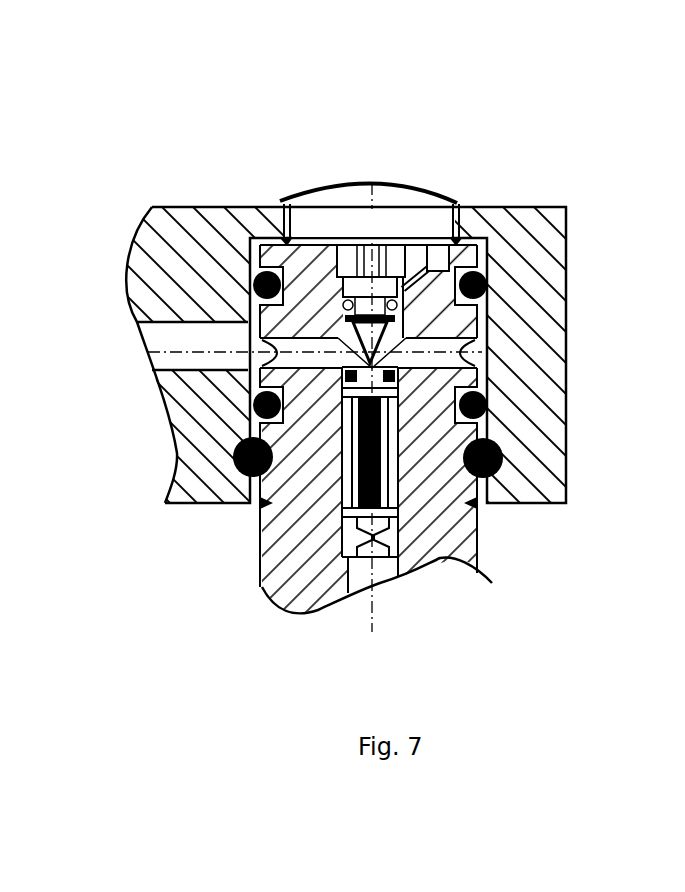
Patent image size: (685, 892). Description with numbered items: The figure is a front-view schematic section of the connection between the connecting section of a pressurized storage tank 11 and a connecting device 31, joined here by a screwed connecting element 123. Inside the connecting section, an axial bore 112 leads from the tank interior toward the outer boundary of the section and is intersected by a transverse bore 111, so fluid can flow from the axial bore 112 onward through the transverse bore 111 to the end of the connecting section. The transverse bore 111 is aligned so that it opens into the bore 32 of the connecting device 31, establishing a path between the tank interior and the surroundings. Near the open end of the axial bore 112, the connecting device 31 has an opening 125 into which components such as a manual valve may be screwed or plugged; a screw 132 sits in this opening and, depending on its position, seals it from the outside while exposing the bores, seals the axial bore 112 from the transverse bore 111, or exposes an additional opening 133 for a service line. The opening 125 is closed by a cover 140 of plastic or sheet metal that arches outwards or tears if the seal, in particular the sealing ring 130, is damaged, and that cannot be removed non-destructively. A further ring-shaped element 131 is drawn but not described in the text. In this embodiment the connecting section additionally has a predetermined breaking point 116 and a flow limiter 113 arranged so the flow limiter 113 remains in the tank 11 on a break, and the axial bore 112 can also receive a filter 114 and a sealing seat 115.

The pressurized storage tank 11 is at (315, 255).
The connecting device 31 is at (194, 253).
The bore 32 is at (190, 353).
The transverse bore 111 is at (444, 353).
The axial bore 112 is at (364, 567).
The flow limiter 113 is at (388, 540).
The filter 114 is at (400, 498).
The sealing seat 115 is at (392, 386).
The predetermined breaking point 116 is at (263, 503).
The screwed connecting element 123 is at (240, 462).
The opening 125 is at (343, 220).
The sealing ring 130 is at (487, 287).
The lower O-ring 131 is at (488, 403).
The screw 132 is at (397, 260).
The additional opening 133 is at (440, 258).
The cover 140 is at (375, 183).